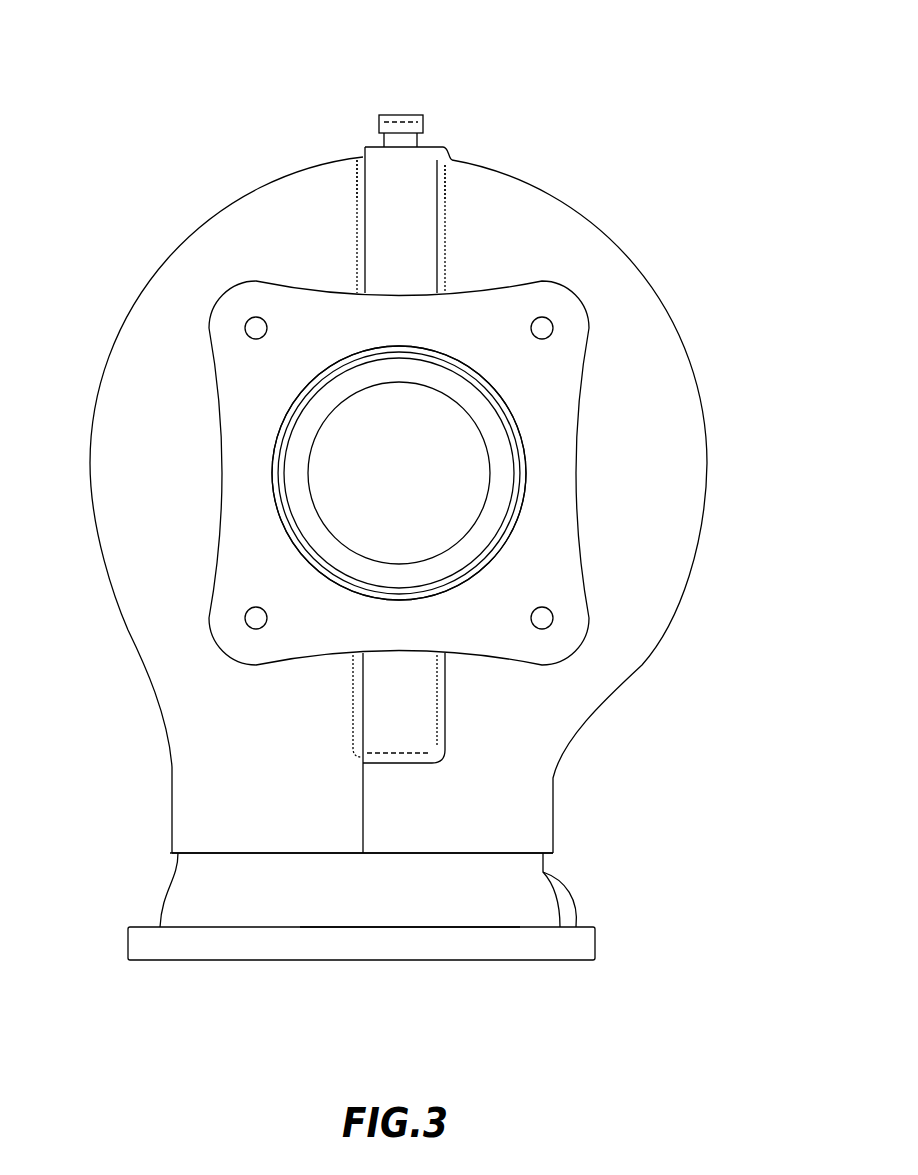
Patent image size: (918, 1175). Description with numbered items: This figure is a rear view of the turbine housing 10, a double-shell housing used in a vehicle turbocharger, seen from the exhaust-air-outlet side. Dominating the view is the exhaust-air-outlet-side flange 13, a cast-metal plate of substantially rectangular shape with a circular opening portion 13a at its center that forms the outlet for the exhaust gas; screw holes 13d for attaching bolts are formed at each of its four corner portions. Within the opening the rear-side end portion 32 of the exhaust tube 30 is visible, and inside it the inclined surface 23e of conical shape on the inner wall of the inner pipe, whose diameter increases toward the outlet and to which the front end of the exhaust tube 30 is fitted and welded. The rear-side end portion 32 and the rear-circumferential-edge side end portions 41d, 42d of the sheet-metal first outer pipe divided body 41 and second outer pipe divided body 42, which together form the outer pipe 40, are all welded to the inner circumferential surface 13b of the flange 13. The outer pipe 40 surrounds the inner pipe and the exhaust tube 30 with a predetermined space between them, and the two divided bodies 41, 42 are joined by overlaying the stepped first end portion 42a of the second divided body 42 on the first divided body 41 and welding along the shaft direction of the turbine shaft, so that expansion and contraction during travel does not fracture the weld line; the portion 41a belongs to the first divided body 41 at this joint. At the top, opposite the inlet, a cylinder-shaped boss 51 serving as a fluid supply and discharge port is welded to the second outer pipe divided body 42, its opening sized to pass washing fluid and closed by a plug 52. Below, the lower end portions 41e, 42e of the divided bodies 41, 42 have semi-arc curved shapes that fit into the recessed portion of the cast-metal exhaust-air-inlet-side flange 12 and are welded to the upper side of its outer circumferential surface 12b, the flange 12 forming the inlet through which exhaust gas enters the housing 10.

The turbine housing 10 is at (406, 98).
The exhaust-air-inlet-side flange 12 is at (333, 961).
The outer circumferential surface 12b is at (412, 865).
The exhaust-air-outlet-side flange 13 is at (224, 522).
The opening portion 13a is at (310, 563).
The inner circumferential surface 13b is at (277, 475).
The screw holes 13d is at (245, 328).
The inclined surface 23e is at (500, 433).
The exhaust tube 30 is at (541, 473).
The rear-side end portion 32 is at (495, 545).
The outer pipe 40 is at (398, 537).
The first outer pipe divided body 41 is at (181, 254).
The first housing upper portion 41a is at (357, 152).
The rear-circumferential-edge side end portion 41d is at (280, 455).
The lower end portion 41e is at (242, 837).
The second outer pipe divided body 42 is at (585, 221).
The first end portion 42a is at (441, 150).
The rear-circumferential-edge side end portion 42d is at (527, 490).
The lower end portion 42e is at (499, 834).
The cylinder-shaped boss 51 is at (384, 142).
The plug 52 is at (421, 117).